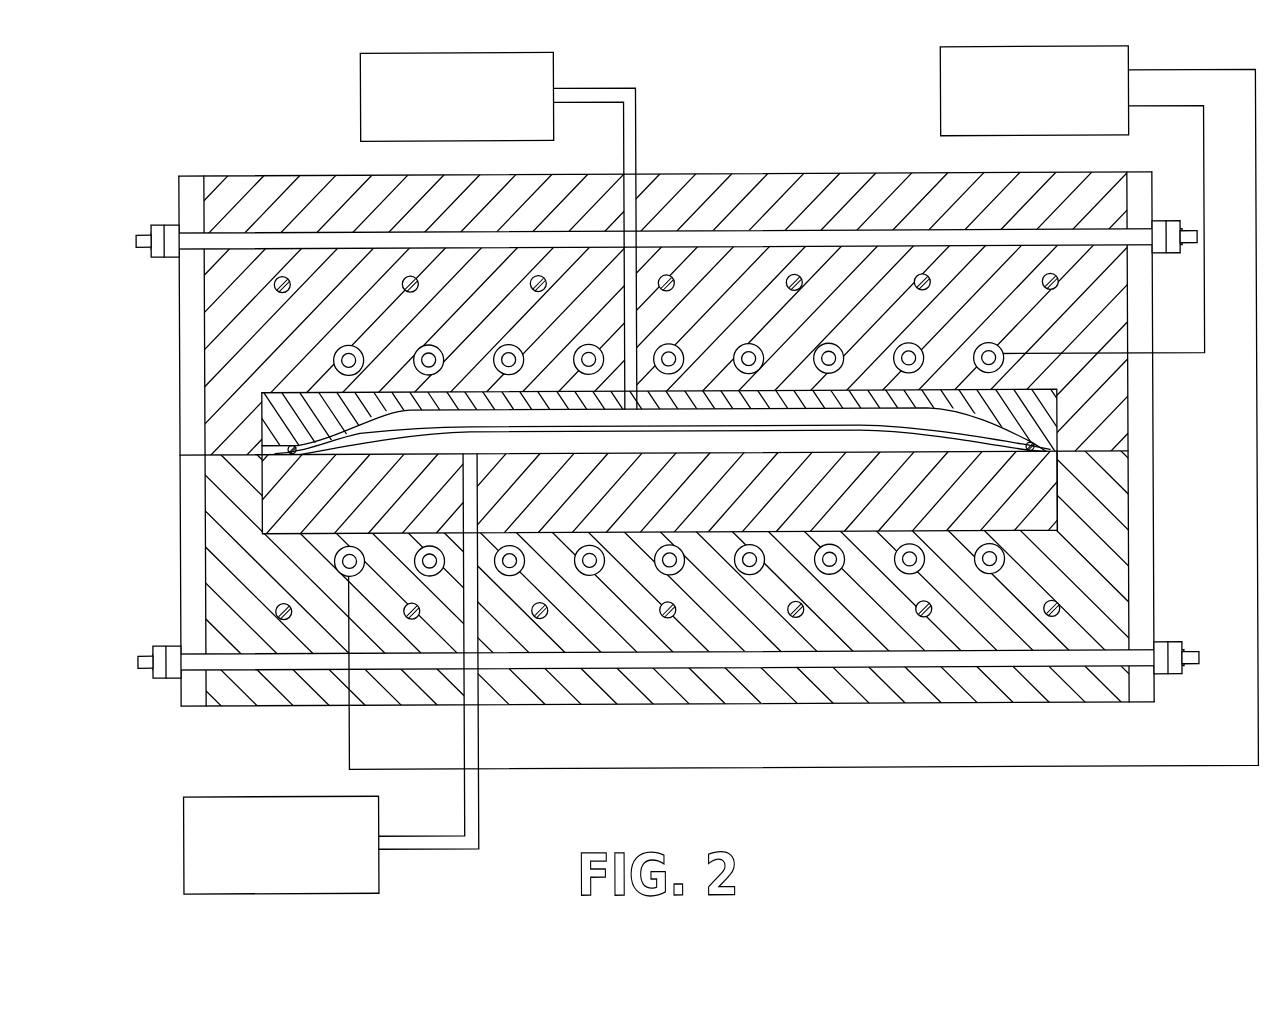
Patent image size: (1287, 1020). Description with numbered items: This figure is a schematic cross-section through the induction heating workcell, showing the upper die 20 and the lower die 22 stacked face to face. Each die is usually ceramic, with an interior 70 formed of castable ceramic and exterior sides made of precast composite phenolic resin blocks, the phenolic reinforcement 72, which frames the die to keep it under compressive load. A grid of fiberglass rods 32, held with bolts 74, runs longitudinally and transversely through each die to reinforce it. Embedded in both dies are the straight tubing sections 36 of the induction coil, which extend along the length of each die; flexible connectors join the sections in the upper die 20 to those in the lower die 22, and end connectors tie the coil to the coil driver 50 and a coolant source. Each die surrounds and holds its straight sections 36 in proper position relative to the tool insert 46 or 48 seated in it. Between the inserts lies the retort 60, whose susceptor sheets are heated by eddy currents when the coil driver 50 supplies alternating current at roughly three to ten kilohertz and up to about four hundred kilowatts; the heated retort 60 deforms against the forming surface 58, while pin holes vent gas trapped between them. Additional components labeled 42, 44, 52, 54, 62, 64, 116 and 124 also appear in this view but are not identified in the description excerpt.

The upper die 20 is at (752, 140).
The lower die 22 is at (1027, 735).
The fiberglass rods 32 is at (256, 225).
The straight tubing section 36 is at (349, 344).
The upper platen 42 is at (1128, 355).
The lower platen 44 is at (1058, 479).
The tool insert 46 is at (285, 410).
The tool insert 48 is at (280, 515).
The coil driver 50 is at (942, 92).
The pressure source 52 is at (362, 97).
The source pressure 54 is at (182, 843).
The forming surface 58 is at (960, 427).
The retort 60 is at (1000, 470).
The pressure conduit 62 is at (640, 174).
The pressure conduit 64 is at (478, 807).
The interior of the dies 70 is at (296, 174).
The phenolic reinforcement 72 is at (192, 336).
The bolts 74 is at (160, 260).
The membrane 116 is at (1030, 445).
The edge seal 124 is at (265, 447).